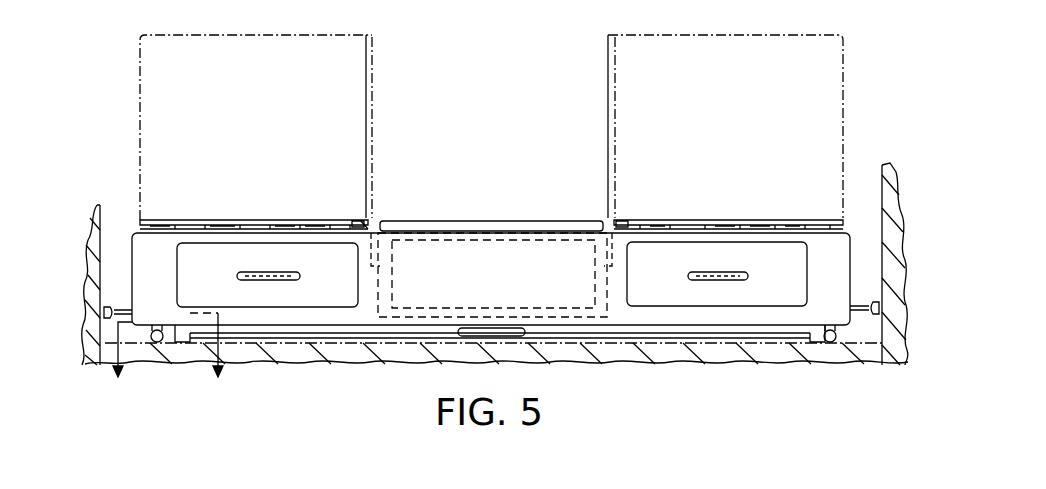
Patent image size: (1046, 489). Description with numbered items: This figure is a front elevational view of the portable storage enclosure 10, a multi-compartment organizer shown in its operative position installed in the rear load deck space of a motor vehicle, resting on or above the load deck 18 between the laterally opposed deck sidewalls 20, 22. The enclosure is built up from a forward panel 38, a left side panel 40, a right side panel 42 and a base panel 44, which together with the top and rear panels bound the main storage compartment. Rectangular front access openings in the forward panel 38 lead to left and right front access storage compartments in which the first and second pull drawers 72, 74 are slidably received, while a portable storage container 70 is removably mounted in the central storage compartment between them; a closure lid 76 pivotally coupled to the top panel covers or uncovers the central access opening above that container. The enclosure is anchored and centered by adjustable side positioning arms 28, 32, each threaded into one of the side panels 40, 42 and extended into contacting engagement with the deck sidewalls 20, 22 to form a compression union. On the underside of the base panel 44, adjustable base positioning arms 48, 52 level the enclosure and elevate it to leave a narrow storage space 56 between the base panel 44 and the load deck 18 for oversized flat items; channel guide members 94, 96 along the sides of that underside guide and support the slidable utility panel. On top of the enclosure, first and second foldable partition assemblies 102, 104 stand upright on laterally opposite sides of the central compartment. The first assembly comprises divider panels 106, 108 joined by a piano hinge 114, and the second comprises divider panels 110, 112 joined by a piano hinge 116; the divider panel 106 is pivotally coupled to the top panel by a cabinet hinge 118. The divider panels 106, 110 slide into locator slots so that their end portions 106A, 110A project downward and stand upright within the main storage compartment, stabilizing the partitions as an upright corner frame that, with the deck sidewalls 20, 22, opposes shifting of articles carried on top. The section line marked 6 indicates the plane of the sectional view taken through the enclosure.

The portable storage enclosure 10 is at (124, 102).
The section line 6- 6 is at (166, 355).
The load deck 18 is at (712, 343).
The deck sidewall 20 is at (95, 216).
The deck sidewall 22 is at (892, 172).
The side positioning arm 28 is at (118, 310).
The side positioning arm 32 is at (877, 318).
The forward panel 38 is at (315, 315).
The left side panel 40 is at (131, 260).
The right side panel 42 is at (852, 252).
The base panel 44 is at (615, 325).
The base positioning arm 48 is at (152, 343).
The base positioning arm 52 is at (858, 342).
The narrow storage space 56 is at (256, 342).
The portable storage container 70 is at (495, 252).
The first pull drawer 72 is at (343, 278).
The second pull drawer 74 is at (795, 275).
The closure lid 76 is at (437, 221).
The channel guide member 94 is at (185, 345).
The channel guide member 96 is at (822, 338).
The first foldable partition assembly 102 is at (223, 208).
The second foldable partition assembly 104 is at (703, 196).
The first divider panel 106 is at (153, 222).
The panel end portion 106A is at (378, 270).
The second divider panel 108 is at (233, 6).
The first divider panel 110 is at (608, 72).
The panel end portion 110A is at (612, 270).
The second divider panel 112 is at (728, 35).
The piano hinge 114 is at (258, 220).
The piano hinge 116 is at (702, 230).
The cabinet hinge 118 is at (356, 216).